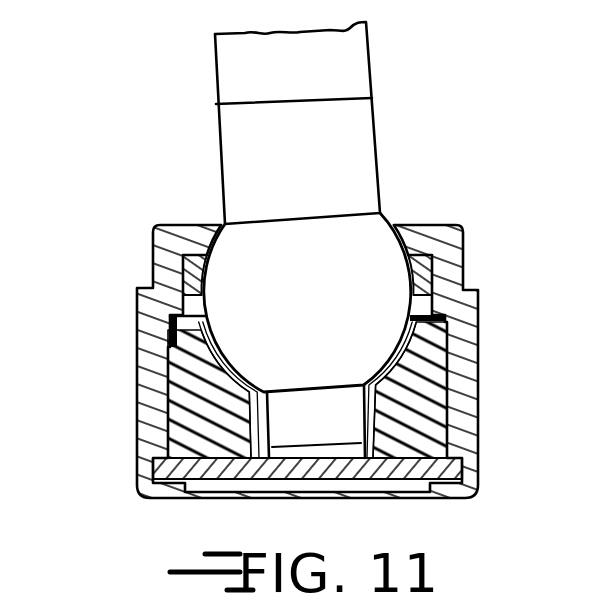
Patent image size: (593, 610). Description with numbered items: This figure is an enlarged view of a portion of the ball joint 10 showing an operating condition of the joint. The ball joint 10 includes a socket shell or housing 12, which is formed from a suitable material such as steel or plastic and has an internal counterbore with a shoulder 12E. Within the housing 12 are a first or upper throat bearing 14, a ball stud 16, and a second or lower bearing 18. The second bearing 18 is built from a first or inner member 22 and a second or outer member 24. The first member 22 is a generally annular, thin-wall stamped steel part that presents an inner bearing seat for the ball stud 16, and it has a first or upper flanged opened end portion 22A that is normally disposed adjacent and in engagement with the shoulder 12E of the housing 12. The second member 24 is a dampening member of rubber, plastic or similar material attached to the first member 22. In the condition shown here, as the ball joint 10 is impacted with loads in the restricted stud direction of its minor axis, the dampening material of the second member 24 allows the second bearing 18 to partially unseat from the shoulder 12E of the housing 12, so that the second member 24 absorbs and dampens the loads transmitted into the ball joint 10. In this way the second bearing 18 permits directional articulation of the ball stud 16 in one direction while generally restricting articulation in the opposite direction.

The ball joint 10 is at (418, 107).
The housing 12 is at (453, 290).
The shoulder 12E is at (172, 340).
The first or upper throat bearing 14 is at (424, 255).
The ball stud 16 is at (385, 160).
The second or lower bearing 18 is at (393, 377).
The first or inner member 22 is at (430, 397).
The first or upper flanged opened end portion 22A is at (453, 292).
The second or outer member 24 is at (445, 427).